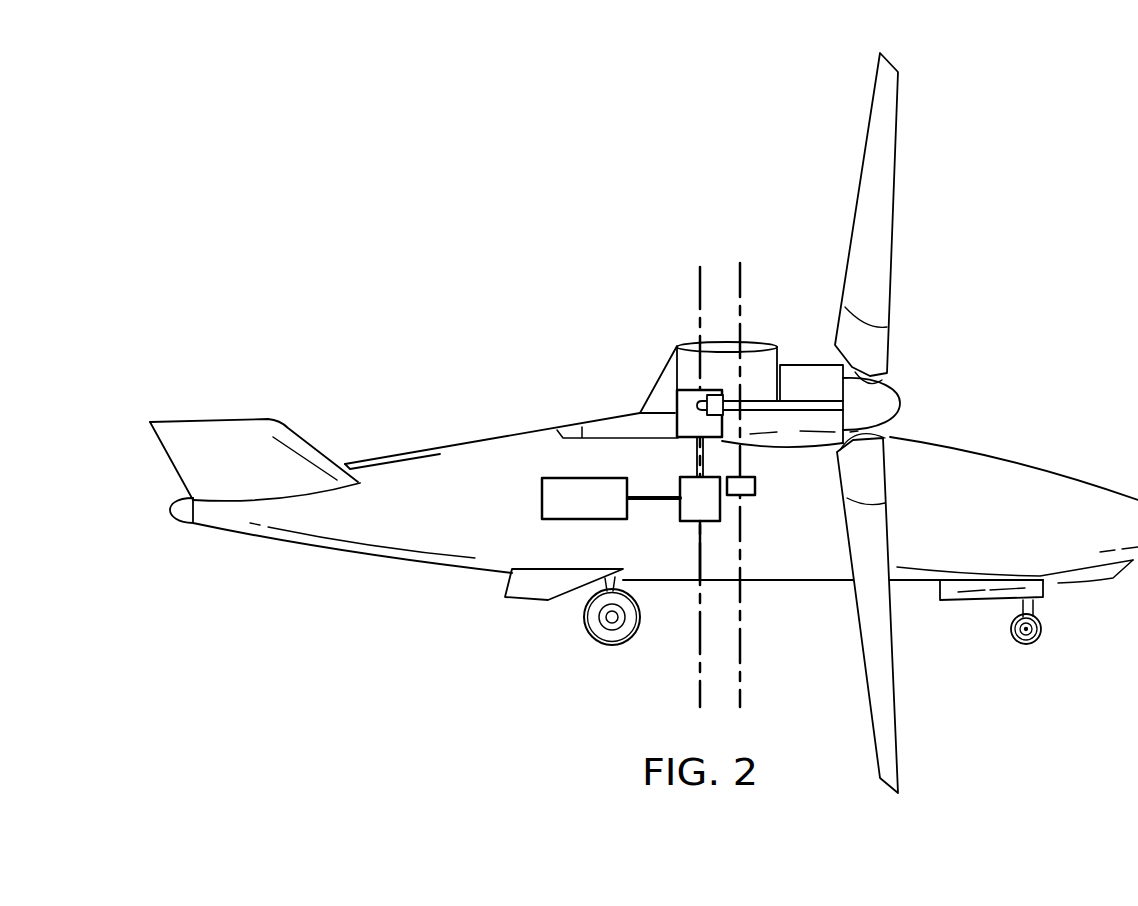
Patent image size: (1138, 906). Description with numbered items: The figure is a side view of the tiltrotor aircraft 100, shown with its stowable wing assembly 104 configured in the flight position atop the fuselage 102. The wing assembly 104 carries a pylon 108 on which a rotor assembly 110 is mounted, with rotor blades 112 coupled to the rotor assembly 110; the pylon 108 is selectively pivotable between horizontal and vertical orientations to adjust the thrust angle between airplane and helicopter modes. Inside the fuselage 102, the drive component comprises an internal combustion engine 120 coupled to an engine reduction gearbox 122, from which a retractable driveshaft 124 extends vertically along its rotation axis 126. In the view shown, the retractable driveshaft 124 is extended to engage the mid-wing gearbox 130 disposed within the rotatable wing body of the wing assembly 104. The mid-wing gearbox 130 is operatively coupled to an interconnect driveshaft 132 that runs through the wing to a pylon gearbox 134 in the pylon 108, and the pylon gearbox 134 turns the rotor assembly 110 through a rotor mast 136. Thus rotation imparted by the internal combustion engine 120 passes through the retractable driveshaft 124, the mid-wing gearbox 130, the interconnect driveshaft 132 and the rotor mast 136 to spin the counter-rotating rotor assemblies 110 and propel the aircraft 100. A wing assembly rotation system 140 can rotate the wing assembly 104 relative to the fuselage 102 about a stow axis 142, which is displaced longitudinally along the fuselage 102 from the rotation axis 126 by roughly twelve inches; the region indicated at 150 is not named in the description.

The aircraft 100 is at (1042, 85).
The fuselage 102 is at (800, 583).
The stowable wing assembly 104 is at (585, 413).
The pylon 108 is at (817, 364).
The rotor assembly 110 is at (914, 405).
The rotor blades 112 is at (893, 202).
The internal combustion engine 120 is at (540, 499).
The engine reduction gearbox 122 is at (680, 510).
The retractable driveshaft 124 is at (695, 466).
The rotation axis 126 is at (700, 697).
The mid-wing gearbox 130 is at (690, 388).
The interconnect driveshaft 132 is at (677, 403).
The pylon gearbox 134 is at (719, 396).
The rotor mast 136 is at (790, 413).
The wing assembly rotation system 140 is at (757, 488).
The stow axis 142 is at (742, 285).
The propulsion system 150 is at (764, 547).